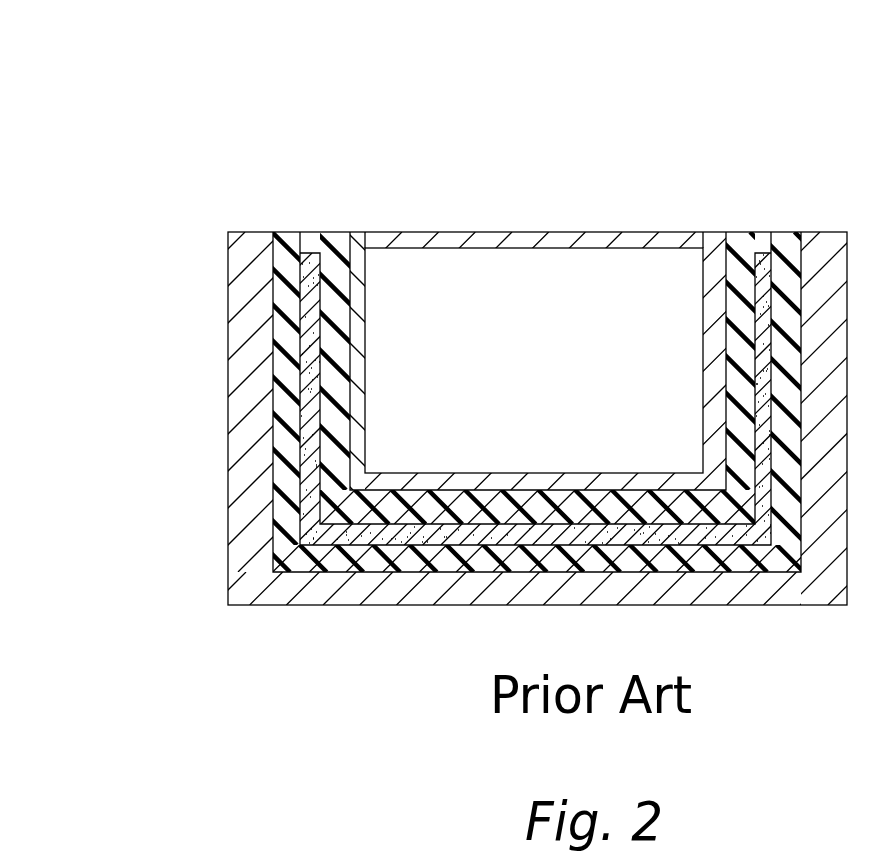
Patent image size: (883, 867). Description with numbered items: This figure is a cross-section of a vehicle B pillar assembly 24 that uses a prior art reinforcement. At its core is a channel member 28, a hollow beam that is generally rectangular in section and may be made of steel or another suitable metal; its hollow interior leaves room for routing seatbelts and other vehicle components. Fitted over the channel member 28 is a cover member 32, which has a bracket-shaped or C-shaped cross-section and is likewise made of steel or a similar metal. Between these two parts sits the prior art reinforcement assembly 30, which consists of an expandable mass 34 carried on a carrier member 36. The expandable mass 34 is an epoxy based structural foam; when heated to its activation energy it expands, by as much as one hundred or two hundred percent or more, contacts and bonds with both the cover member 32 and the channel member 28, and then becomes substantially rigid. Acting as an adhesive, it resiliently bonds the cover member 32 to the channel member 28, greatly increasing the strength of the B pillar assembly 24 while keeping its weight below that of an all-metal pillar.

The B pillar assembly 24 is at (237, 708).
The channel member 28 is at (512, 235).
The prior art reinforcement assembly 30 is at (317, 233).
The cover member 32 is at (248, 233).
The expandable mass 34 is at (287, 232).
The carrier member 36 is at (763, 257).